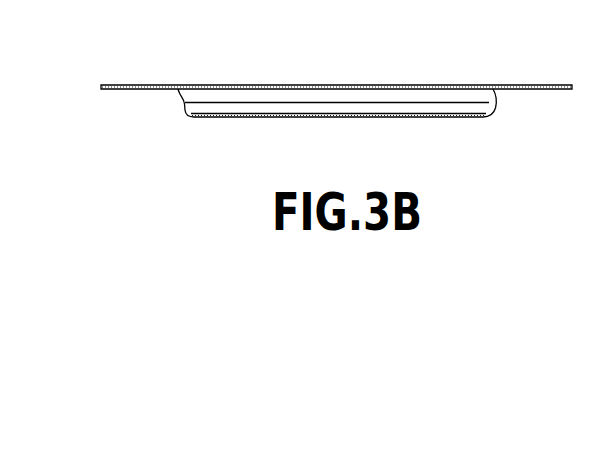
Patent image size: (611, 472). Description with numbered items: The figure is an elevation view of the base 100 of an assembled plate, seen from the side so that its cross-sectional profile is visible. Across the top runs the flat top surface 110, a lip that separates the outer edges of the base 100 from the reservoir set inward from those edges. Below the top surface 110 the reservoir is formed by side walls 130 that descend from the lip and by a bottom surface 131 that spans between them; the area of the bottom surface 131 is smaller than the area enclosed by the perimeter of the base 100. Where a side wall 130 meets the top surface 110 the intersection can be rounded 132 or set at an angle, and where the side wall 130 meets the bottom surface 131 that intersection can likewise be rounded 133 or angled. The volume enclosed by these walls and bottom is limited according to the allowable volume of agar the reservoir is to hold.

The base 100 is at (338, 52).
The top surface 110 is at (547, 85).
The side walls 130 is at (217, 103).
The bottom surface 131 is at (390, 118).
The rounded intersection 132 is at (493, 92).
The rounded intersection 133 is at (490, 115).